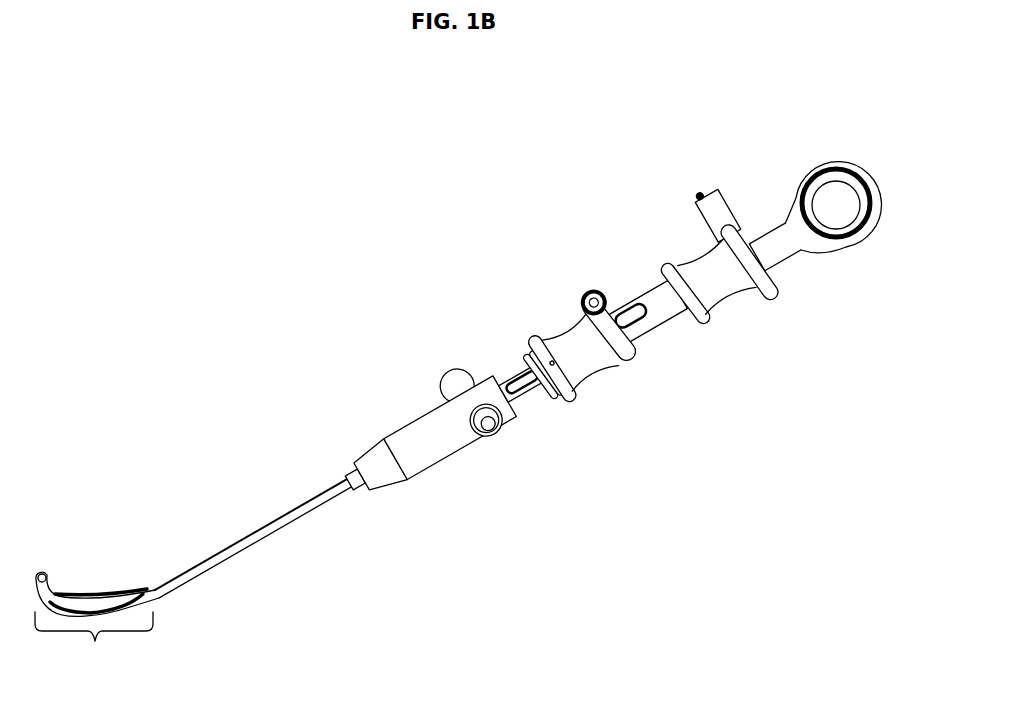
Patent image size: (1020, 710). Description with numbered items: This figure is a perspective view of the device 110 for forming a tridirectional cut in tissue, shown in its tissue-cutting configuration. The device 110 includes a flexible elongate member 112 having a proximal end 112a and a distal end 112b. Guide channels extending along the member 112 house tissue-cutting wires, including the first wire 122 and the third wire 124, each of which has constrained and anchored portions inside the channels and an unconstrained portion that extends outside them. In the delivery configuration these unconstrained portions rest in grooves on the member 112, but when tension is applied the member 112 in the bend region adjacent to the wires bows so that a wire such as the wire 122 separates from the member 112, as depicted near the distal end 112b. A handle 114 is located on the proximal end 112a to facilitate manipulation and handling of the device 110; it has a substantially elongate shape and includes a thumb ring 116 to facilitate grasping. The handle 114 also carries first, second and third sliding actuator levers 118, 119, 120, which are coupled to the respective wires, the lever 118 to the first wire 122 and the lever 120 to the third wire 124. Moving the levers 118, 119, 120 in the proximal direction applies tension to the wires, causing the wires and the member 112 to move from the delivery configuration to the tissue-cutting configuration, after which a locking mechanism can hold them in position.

The device 110 is at (174, 228).
The flexible elongate member 112 is at (237, 540).
The proximal end 112a is at (352, 523).
The distal end 112b is at (66, 555).
The handle 114 is at (777, 255).
The thumb ring 116 is at (817, 178).
The first sliding actuator lever 118 is at (698, 194).
The second sliding actuator lever 119 is at (587, 294).
The third sliding actuator lever 120 is at (447, 372).
The first tissue-cutting wire 122 is at (107, 593).
The third tissue-cutting wire 124 is at (112, 610).